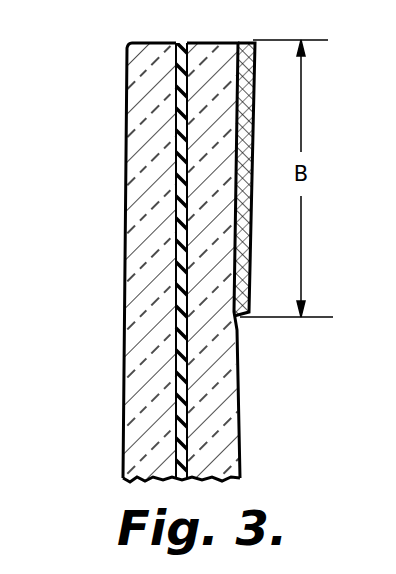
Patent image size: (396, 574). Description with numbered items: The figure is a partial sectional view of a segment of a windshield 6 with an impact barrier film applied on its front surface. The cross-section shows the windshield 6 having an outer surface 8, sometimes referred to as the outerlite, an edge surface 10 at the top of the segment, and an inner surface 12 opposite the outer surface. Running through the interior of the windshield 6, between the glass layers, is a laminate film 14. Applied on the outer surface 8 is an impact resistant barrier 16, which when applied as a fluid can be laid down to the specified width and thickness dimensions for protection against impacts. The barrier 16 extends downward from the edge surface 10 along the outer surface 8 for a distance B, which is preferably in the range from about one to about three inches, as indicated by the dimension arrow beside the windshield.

The windshield 6 is at (123, 436).
The outer surface 8 is at (243, 421).
The edge surface 10 is at (179, 241).
The inner surface 12 is at (125, 182).
The laminate film 14 is at (174, 344).
The impact resistant barrier 16 is at (248, 313).